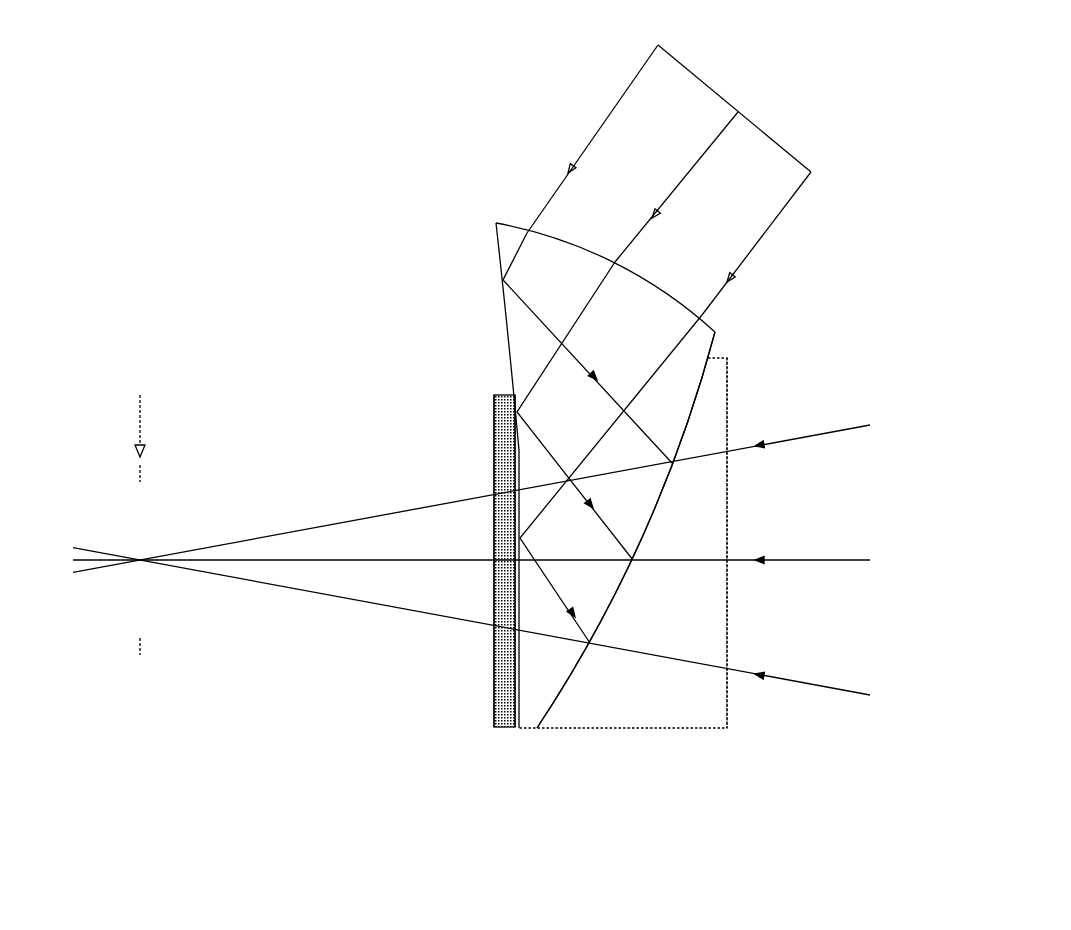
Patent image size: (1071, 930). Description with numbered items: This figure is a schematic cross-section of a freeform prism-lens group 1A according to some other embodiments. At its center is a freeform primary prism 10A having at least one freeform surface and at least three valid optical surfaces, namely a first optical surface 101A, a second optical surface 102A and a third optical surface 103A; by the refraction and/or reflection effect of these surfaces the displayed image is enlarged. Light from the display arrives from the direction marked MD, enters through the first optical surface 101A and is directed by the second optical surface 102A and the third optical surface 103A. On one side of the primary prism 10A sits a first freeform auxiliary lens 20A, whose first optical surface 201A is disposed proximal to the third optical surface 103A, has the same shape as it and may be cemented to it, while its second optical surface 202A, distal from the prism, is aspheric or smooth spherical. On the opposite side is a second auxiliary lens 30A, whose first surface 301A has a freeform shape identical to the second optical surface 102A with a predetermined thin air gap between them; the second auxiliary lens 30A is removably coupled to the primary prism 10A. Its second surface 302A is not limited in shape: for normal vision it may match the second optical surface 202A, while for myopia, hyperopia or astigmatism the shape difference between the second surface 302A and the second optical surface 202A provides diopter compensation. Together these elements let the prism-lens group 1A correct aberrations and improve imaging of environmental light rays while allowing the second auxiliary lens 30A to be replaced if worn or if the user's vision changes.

The freeform prism-lens group 1A is at (325, 232).
The freeform primary prism 10A is at (635, 443).
The first optical surface 101A is at (528, 235).
The second optical surface 102A is at (502, 275).
The third optical surface 103A is at (708, 358).
The first freeform auxiliary lens 20A is at (680, 515).
The first optical surface 201A is at (712, 350).
The second optical surface 202A is at (728, 625).
The second auxiliary lens 30A is at (502, 393).
The first surface 301A is at (515, 732).
The second surface 302A is at (491, 730).
The image display unit / display direction MD is at (658, 45).